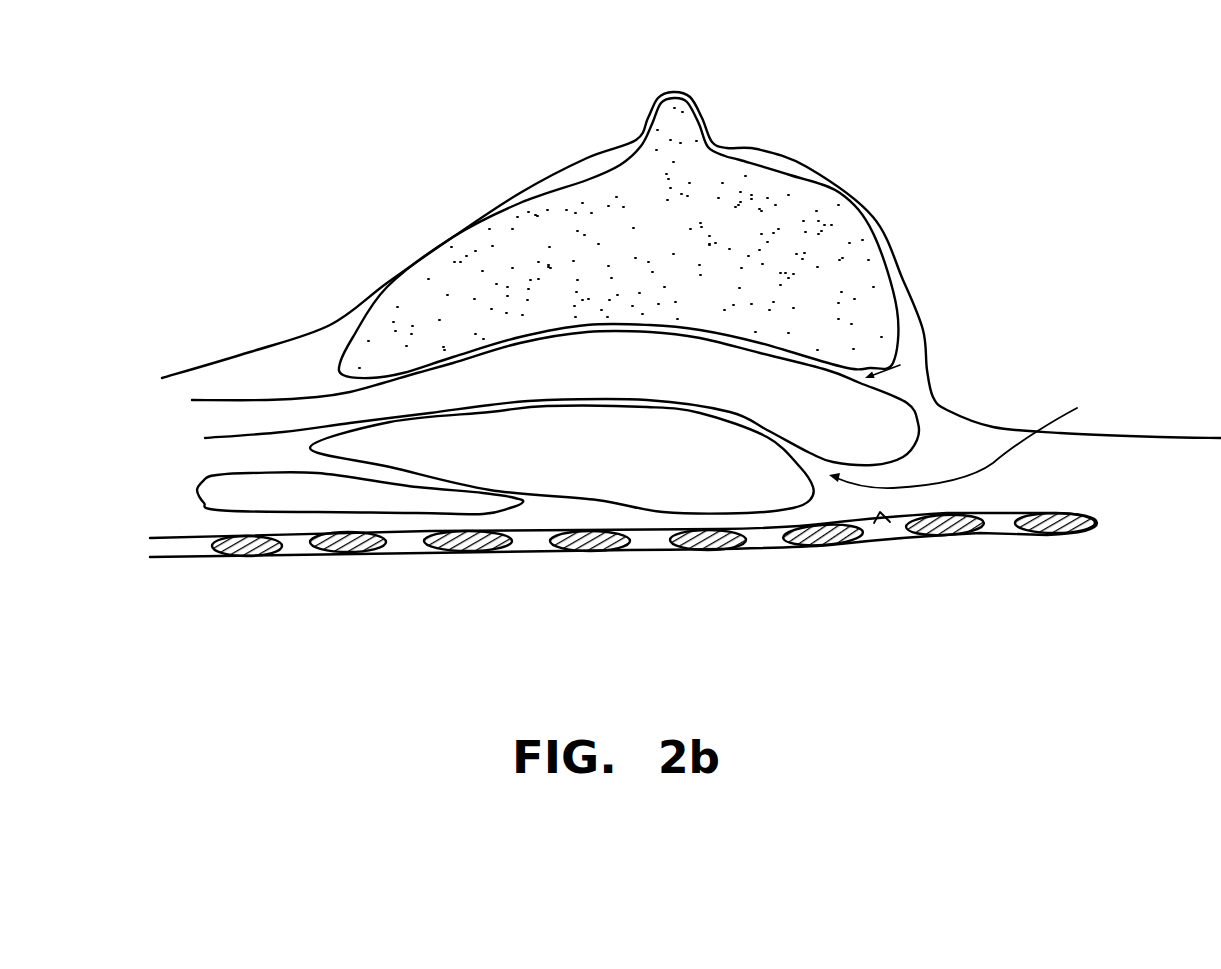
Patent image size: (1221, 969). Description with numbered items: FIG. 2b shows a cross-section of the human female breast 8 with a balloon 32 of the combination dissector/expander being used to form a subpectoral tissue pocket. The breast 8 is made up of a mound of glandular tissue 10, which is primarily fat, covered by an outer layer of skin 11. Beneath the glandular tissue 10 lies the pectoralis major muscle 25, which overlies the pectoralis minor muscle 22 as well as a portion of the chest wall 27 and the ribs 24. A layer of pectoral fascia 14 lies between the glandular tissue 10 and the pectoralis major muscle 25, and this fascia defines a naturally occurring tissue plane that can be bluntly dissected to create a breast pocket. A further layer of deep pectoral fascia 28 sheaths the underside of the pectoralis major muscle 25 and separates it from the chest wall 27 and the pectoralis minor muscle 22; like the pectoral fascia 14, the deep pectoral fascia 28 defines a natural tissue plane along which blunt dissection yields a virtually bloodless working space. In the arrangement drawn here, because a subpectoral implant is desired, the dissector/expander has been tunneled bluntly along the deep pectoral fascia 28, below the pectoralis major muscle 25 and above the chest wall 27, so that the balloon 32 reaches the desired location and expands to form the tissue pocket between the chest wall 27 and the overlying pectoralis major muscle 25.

The breast 8 is at (445, 122).
The glandular tissue 10 is at (817, 230).
The skin 11 is at (767, 150).
The pectoral fascia 14 is at (892, 423).
The pectoralis minor muscle 22 is at (318, 493).
The ribs 24 is at (353, 548).
The pectoralis major muscle 25 is at (929, 397).
The chest wall 27 is at (890, 522).
The deep pectoral fascia 28 is at (970, 435).
The balloon 32 is at (462, 463).